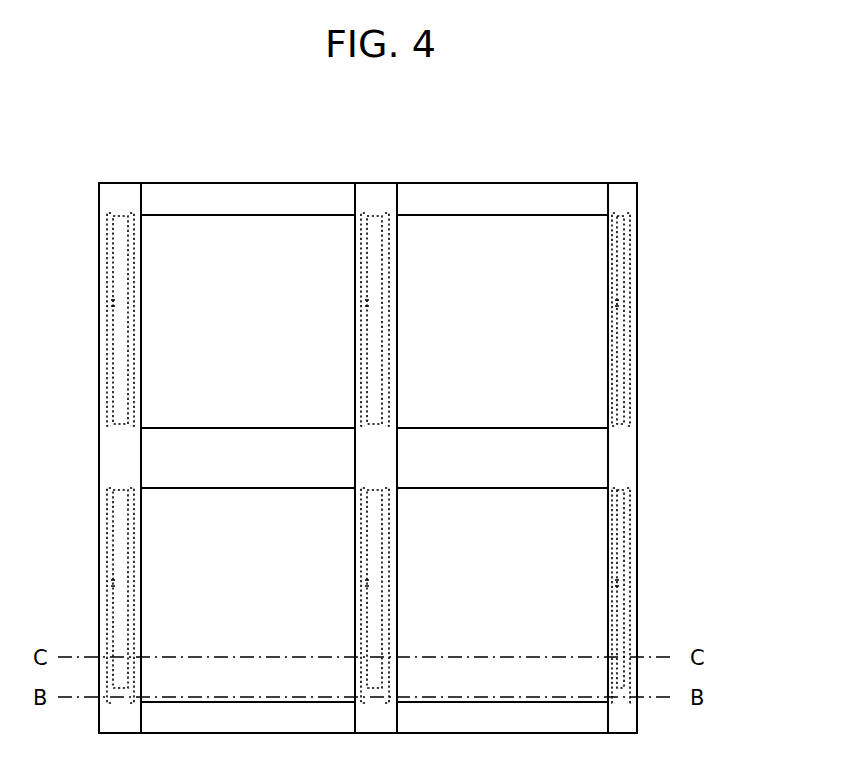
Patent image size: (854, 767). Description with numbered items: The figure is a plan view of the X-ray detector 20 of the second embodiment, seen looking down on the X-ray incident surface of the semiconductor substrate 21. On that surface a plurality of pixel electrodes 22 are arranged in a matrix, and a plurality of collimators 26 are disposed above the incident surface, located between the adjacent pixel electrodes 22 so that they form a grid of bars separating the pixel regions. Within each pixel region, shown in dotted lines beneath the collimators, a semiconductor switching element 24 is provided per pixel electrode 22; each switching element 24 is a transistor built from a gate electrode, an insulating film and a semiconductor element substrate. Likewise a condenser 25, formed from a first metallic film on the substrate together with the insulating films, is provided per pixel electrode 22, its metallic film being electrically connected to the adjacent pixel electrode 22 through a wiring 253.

The X-ray detector 20 is at (684, 178).
The semiconductor substrate 21 is at (590, 467).
The pixel electrode 22 is at (441, 226).
The semiconductor switching element 24 is at (630, 421).
The condenser 25 is at (630, 284).
The collimator 26 is at (617, 190).
The wiring 253 is at (613, 618).